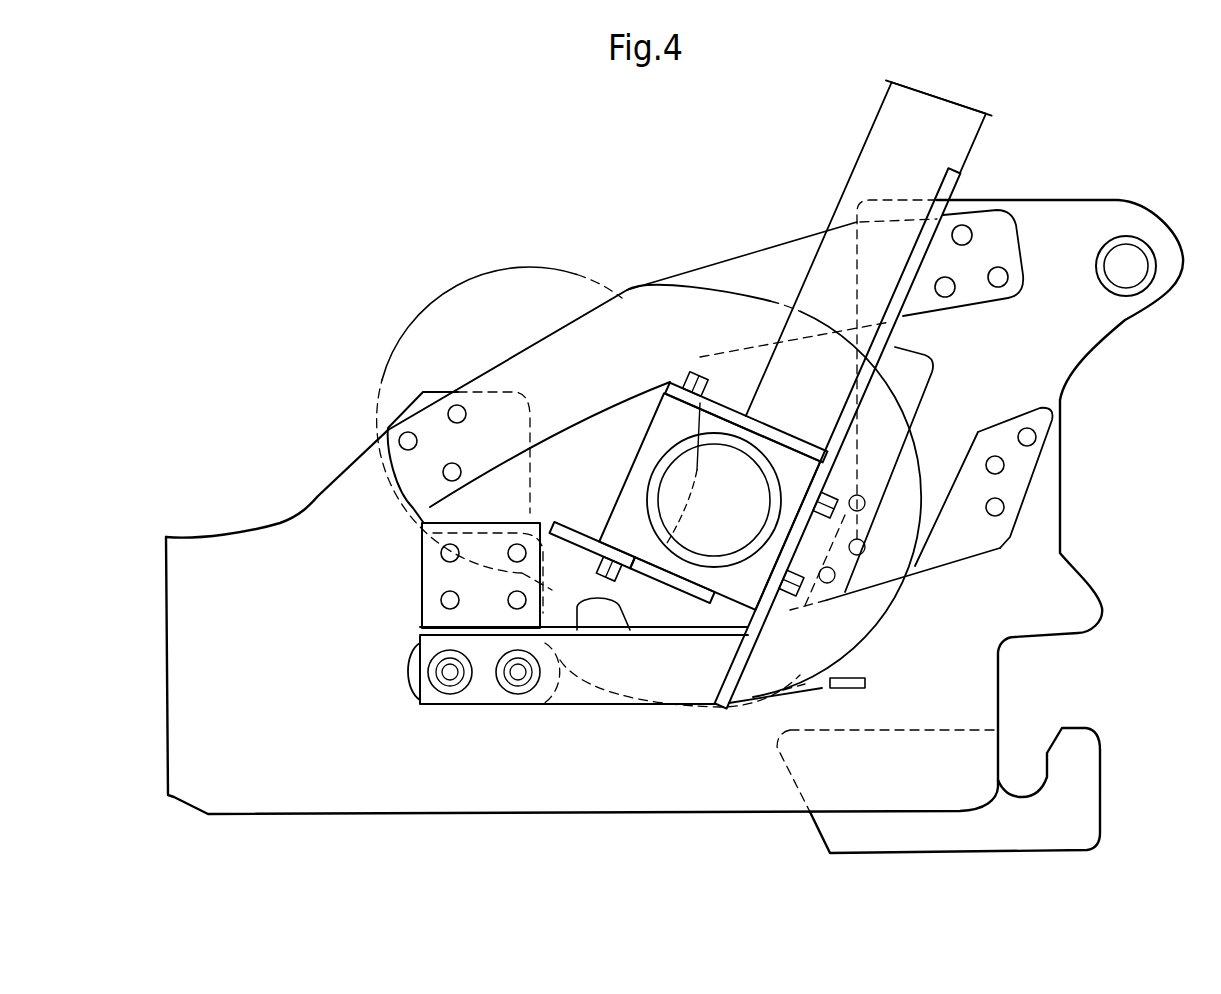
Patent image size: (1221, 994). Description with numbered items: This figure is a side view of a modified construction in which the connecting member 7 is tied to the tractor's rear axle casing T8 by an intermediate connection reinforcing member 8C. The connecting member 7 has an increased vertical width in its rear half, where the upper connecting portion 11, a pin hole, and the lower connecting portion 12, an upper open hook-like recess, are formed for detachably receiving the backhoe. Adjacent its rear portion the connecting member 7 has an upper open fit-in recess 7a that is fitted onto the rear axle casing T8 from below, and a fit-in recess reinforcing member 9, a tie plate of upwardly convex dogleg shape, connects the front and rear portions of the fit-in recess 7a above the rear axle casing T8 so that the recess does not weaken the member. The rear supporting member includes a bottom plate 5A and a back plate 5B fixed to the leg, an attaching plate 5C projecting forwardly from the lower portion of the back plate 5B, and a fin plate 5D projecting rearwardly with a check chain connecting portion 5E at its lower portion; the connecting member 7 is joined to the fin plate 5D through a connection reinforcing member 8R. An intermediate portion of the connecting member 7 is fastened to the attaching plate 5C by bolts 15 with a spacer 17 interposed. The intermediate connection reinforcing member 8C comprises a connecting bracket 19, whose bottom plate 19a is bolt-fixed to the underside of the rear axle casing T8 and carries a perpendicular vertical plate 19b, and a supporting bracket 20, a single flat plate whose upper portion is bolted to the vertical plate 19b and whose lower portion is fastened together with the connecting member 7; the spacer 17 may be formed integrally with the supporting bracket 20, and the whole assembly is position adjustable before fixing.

The bottom plate 5A is at (718, 397).
The back plate 5B is at (748, 705).
The attaching plate 5C is at (572, 704).
The fin plate 5D is at (823, 630).
The check chain connecting portion 5E is at (866, 683).
The connecting member 7 is at (343, 797).
The fit-in recess 7a is at (630, 630).
The intermediate connection reinforcing member 8C is at (382, 521).
The connection reinforcing member 8R is at (1025, 480).
The fit-in recess reinforcing member 9 is at (527, 350).
The upper connecting portion 11 is at (1077, 218).
The lower connecting portion 12 is at (1045, 797).
The bolts 15 is at (510, 683).
The spacer 17 is at (440, 683).
The connecting bracket 19 is at (625, 519).
The bottom plate 19a is at (600, 540).
The vertical plate 19b is at (556, 521).
The supporting bracket 20 is at (433, 580).
The rear axle casing T8 is at (665, 425).